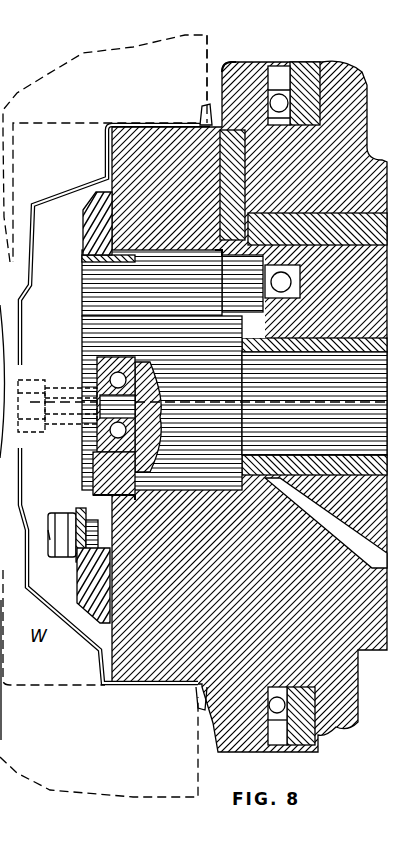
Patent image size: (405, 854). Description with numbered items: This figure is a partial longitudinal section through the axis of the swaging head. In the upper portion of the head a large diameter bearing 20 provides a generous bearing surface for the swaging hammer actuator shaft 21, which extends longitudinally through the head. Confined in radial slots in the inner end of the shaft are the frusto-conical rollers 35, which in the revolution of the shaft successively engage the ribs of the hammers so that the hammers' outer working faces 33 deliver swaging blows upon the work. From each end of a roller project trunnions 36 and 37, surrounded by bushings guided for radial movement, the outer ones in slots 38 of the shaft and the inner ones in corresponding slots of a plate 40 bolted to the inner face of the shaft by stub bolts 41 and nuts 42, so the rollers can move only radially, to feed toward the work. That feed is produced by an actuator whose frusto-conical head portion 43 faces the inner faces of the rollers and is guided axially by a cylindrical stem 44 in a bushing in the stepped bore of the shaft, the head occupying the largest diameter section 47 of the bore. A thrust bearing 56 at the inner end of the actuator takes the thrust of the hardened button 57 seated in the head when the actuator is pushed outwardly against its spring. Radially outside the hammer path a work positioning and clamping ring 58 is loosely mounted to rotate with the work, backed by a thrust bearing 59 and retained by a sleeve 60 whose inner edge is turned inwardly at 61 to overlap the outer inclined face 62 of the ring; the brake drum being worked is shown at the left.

The large diameter bearing 20 is at (263, 300).
The swaging hammer actuator shaft 21 is at (343, 291).
The outer working faces 33 is at (8, 266).
The rollers 35 is at (202, 427).
The trunnion 36 is at (298, 213).
The trunnion 37 is at (90, 280).
The slots 38 is at (216, 250).
The plate 40 is at (80, 575).
The stub bolts 41 is at (80, 518).
The nuts 42 is at (55, 538).
The frusto-conical head portion 43 is at (202, 427).
The cylindrical stem 44 is at (202, 428).
The largest diameter section of the bore 47 is at (110, 492).
The thrust bearing 56 is at (100, 438).
The hardened button 57 is at (98, 392).
The work positioning and clamping ring 58 is at (224, 106).
The thrust bearing 59 is at (276, 66).
The sleeve 60 is at (292, 64).
The inwardly turned inner edge 61 is at (221, 68).
The outer inclined face 62 is at (216, 118).